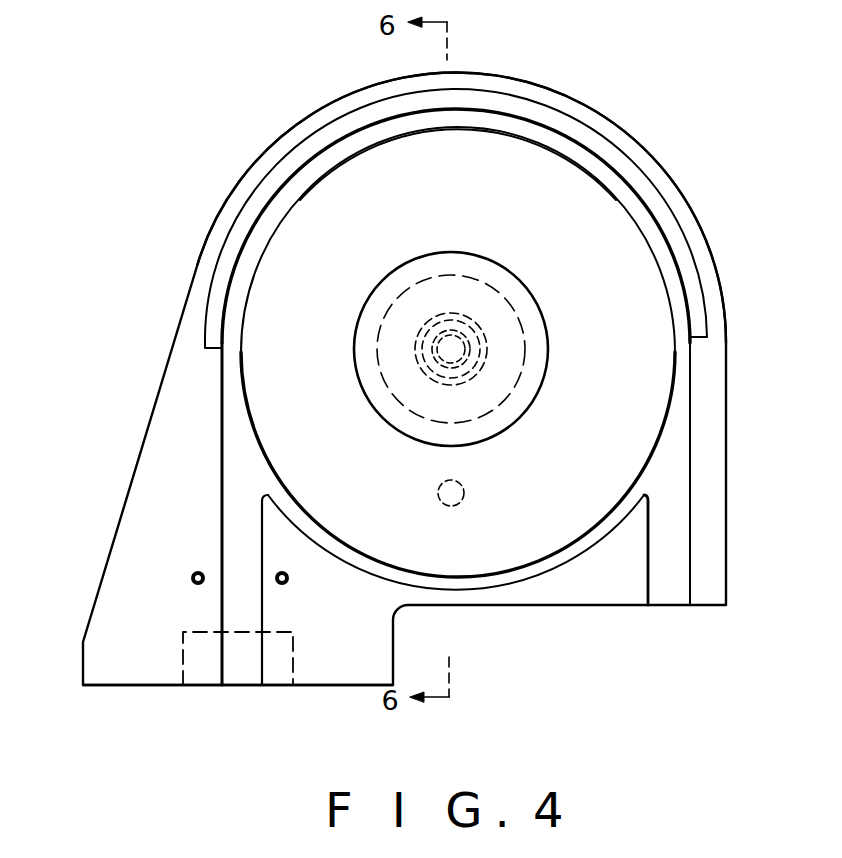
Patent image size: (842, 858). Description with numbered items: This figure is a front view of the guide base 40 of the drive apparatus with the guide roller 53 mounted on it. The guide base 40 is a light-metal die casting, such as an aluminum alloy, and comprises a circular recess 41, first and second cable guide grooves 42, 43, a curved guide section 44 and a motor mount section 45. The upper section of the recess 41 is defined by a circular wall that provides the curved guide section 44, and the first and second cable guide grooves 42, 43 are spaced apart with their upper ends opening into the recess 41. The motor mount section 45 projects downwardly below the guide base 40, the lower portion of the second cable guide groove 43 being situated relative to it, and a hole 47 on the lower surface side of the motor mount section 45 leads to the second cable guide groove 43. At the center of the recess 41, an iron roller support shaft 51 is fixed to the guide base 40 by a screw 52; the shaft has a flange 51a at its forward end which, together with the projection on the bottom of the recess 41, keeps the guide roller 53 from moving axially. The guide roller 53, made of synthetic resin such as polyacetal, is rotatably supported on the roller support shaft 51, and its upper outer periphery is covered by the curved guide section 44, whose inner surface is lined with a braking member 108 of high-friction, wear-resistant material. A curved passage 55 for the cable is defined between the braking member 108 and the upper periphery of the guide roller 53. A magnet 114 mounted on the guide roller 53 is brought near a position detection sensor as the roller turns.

The guide base 40 is at (156, 411).
The recess 41 is at (564, 553).
The first cable guide groove 42 is at (678, 560).
The second cable guide groove 43 is at (228, 531).
The curved guide section 44 is at (328, 113).
The motor mount section 45 is at (338, 682).
The hole 47 is at (200, 680).
The roller support shaft 51 is at (515, 360).
The flange 51a is at (514, 408).
The screw 52 is at (466, 337).
The guide roller 53 is at (592, 213).
The curved passage 55 is at (520, 128).
The braking member 108 is at (290, 167).
The magnet 114 is at (437, 493).